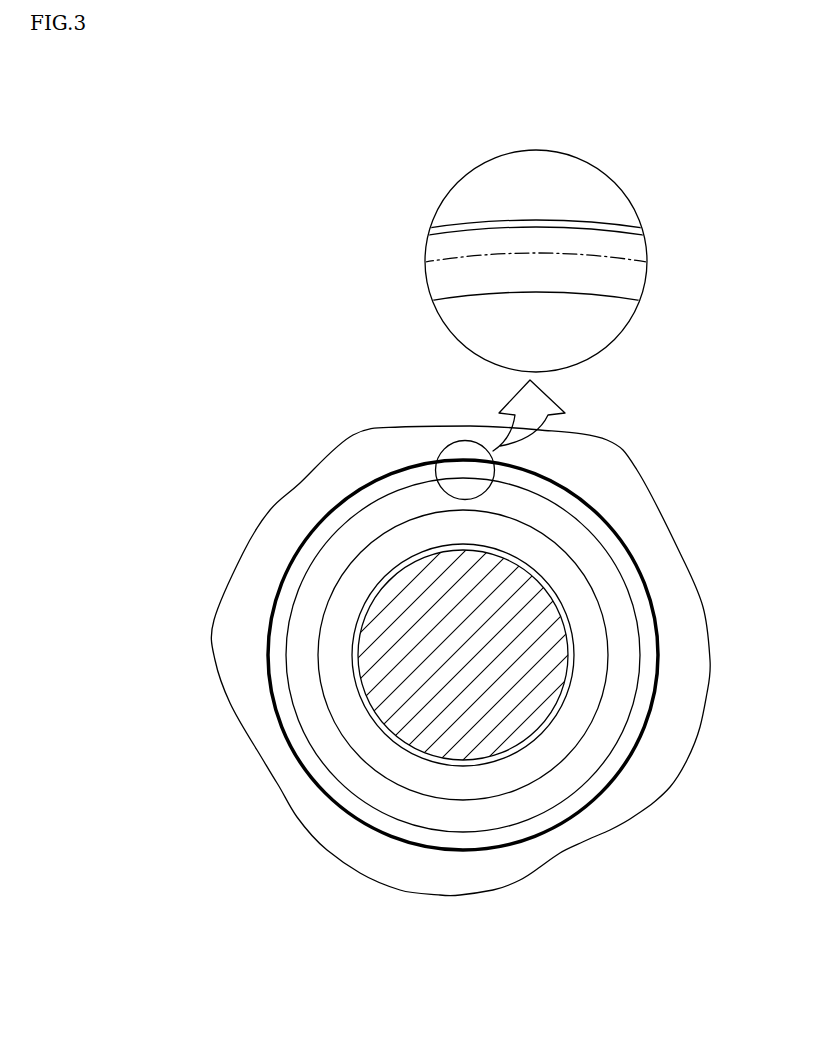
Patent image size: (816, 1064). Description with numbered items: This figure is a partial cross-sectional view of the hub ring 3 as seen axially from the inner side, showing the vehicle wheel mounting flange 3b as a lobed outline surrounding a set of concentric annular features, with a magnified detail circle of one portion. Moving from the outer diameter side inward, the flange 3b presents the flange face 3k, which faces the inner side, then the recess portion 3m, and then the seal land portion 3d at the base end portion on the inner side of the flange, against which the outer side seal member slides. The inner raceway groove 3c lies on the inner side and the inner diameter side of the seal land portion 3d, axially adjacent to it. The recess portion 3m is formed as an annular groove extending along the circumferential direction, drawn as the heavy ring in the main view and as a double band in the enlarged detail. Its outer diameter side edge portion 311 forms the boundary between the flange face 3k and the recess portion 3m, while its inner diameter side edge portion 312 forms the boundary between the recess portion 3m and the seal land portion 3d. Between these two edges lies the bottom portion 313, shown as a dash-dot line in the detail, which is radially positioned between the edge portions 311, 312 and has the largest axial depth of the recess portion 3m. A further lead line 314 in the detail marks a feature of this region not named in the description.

The hub ring 3 is at (616, 877).
The vehicle wheel mounting flange 3b is at (274, 504).
The inner raceway groove 3c is at (337, 698).
The seal land portion 3d is at (357, 777).
The flange face 3k is at (640, 515).
The recess portion 3m is at (640, 594).
The outer diameter side edge portion 311 is at (465, 228).
The inner diameter side edge portion 312 is at (590, 298).
The bottom portion 313 is at (455, 262).
The shield portion 314 is at (508, 240).